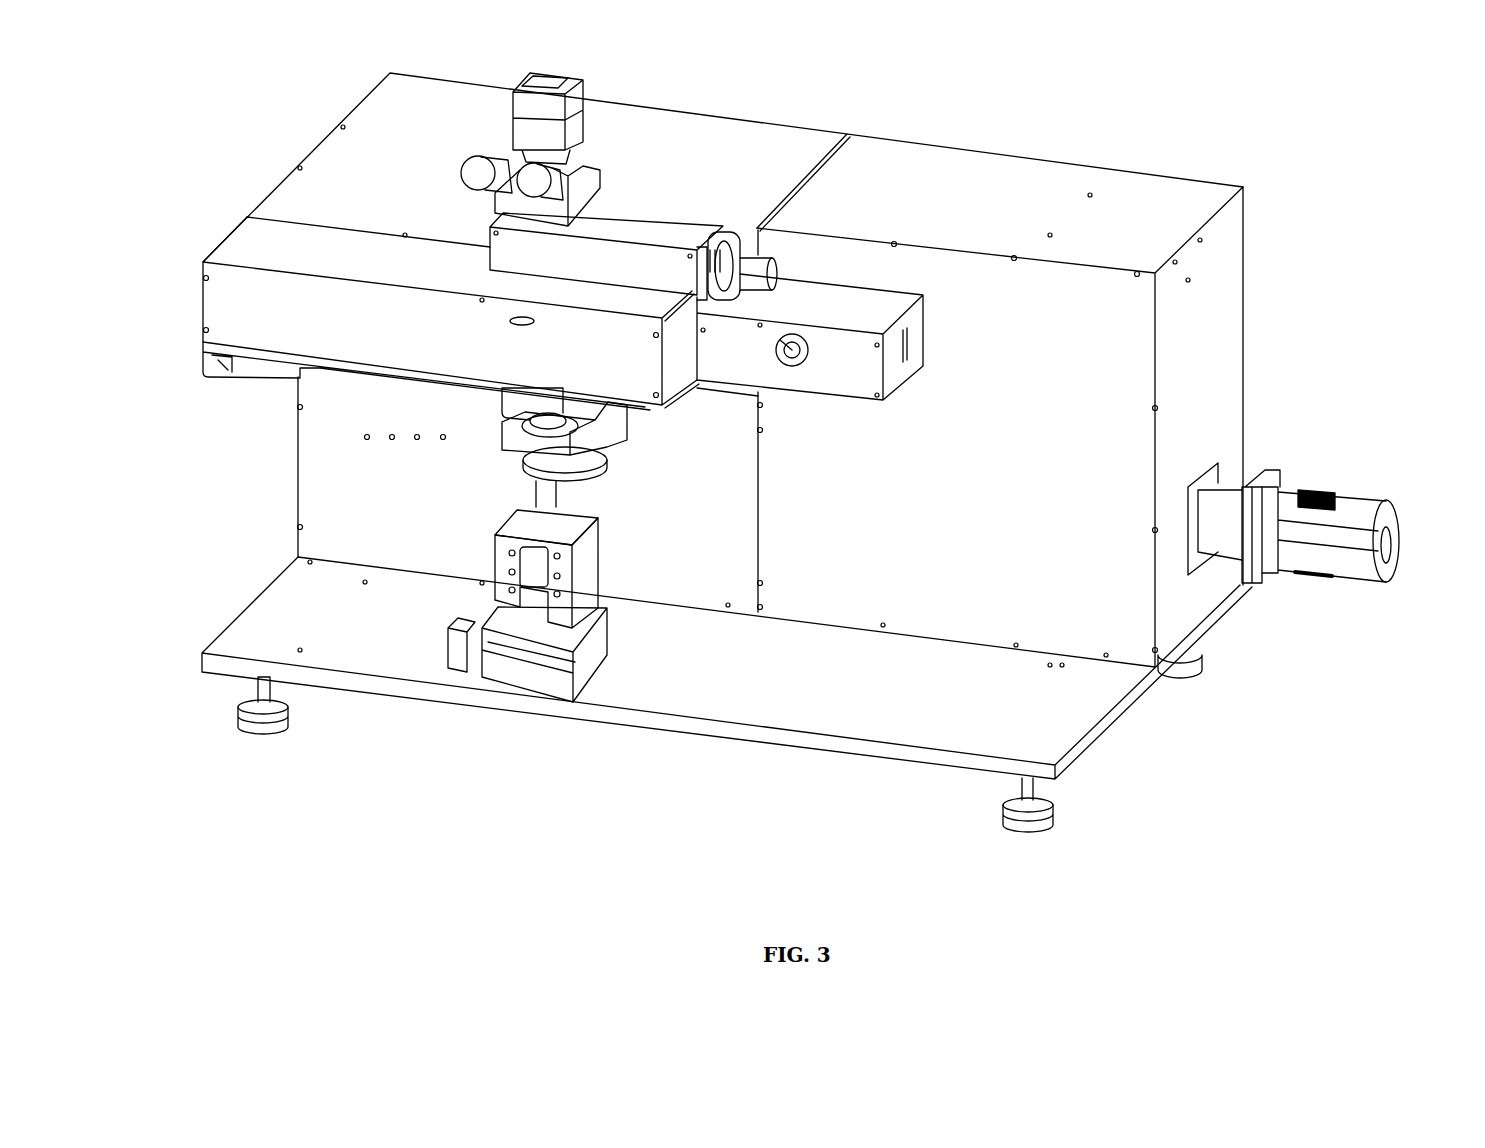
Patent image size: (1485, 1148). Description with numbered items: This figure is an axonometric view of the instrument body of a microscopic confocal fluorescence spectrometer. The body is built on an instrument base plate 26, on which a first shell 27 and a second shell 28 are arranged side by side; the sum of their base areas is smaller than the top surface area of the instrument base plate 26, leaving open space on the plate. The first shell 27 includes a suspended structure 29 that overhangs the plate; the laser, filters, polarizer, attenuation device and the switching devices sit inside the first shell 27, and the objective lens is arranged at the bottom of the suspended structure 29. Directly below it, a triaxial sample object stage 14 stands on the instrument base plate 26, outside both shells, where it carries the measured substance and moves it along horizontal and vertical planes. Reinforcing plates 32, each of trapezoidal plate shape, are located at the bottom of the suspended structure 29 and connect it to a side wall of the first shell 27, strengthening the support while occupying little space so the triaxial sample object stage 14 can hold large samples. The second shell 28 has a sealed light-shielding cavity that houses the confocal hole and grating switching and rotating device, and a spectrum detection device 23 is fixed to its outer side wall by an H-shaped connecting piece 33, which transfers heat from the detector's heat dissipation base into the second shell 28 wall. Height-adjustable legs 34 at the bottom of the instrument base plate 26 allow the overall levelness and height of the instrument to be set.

The triaxial sample object stage 14 is at (527, 613).
The spectrum detection device 23 is at (1350, 525).
The instrument base plate 26 is at (1040, 708).
The first shell 27 is at (743, 168).
The second shell 28 is at (1133, 213).
The suspended structure 29 is at (307, 305).
The reinforcing plate 32 is at (238, 377).
The connecting piece 33 is at (1225, 513).
The leg 34 is at (1018, 823).